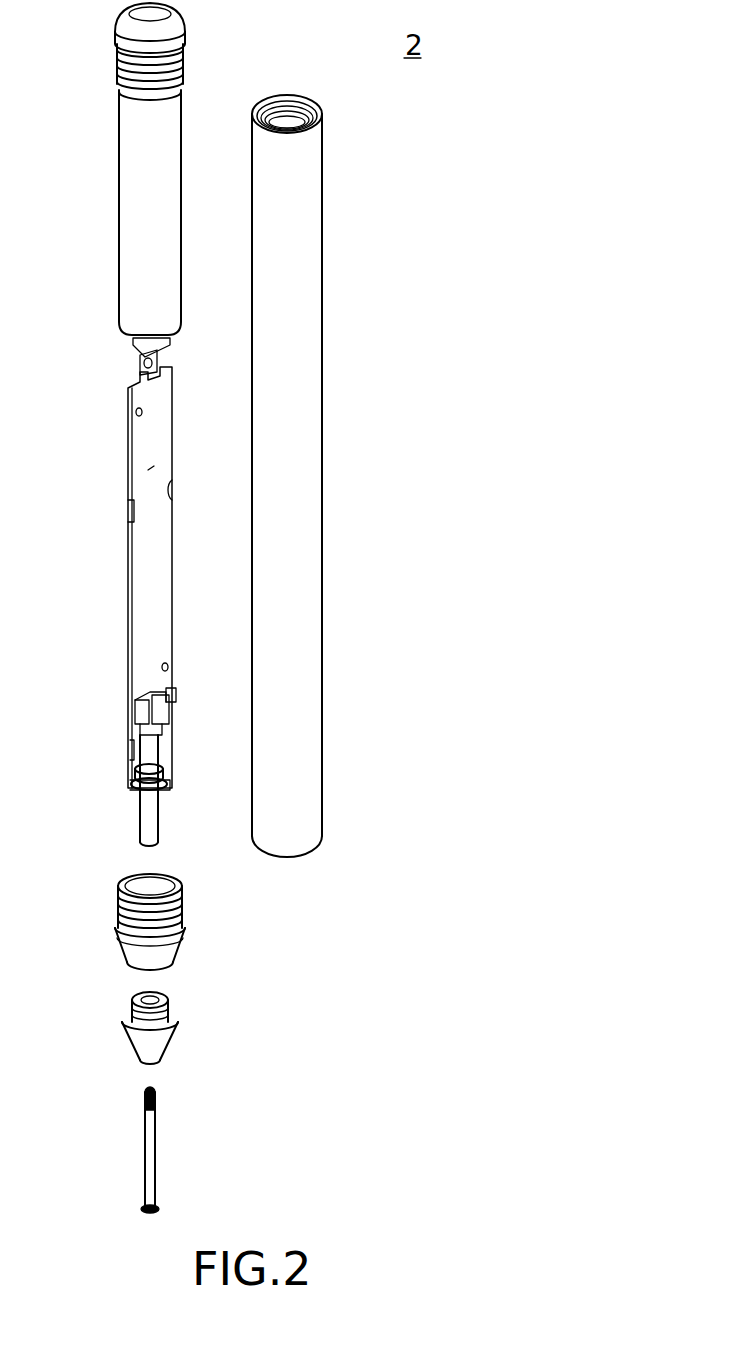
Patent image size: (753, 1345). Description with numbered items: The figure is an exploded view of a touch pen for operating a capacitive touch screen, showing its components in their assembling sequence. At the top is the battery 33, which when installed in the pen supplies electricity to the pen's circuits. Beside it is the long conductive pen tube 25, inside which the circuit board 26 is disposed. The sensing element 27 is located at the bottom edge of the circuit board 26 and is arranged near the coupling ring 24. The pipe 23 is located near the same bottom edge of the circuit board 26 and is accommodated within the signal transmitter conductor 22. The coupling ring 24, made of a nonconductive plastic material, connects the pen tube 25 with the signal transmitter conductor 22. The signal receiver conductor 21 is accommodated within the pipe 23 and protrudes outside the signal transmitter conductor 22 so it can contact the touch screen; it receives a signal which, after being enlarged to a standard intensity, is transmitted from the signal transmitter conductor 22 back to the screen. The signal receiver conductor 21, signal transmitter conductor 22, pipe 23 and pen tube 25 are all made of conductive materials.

The signal receiver conductor 21 is at (152, 1160).
The signal transmitter conductor 22 is at (142, 1042).
The pipe 23 is at (152, 830).
The coupling ring 24 is at (172, 938).
The pen tube 25 is at (310, 370).
The circuit board 26 is at (160, 607).
The sensing element 27 is at (140, 705).
The battery 33 is at (165, 185).